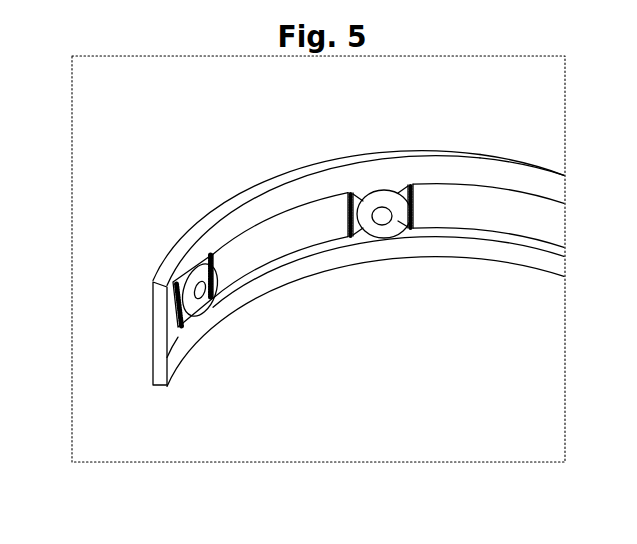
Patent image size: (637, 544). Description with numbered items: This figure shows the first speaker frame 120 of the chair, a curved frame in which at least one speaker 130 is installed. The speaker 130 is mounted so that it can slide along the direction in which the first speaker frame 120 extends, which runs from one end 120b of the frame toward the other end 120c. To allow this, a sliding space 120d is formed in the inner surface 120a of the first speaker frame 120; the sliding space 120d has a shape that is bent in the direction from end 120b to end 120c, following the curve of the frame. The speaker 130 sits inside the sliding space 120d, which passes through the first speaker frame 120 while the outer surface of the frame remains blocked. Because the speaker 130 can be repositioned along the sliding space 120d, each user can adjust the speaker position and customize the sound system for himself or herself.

The first speaker frame 120 is at (247, 190).
The inner surface 120a is at (177, 352).
The first end of the first speaker frame 120b is at (170, 226).
The second end of the first speaker frame 120c is at (517, 146).
The sliding space 120d is at (307, 222).
The speaker 130 is at (393, 226).